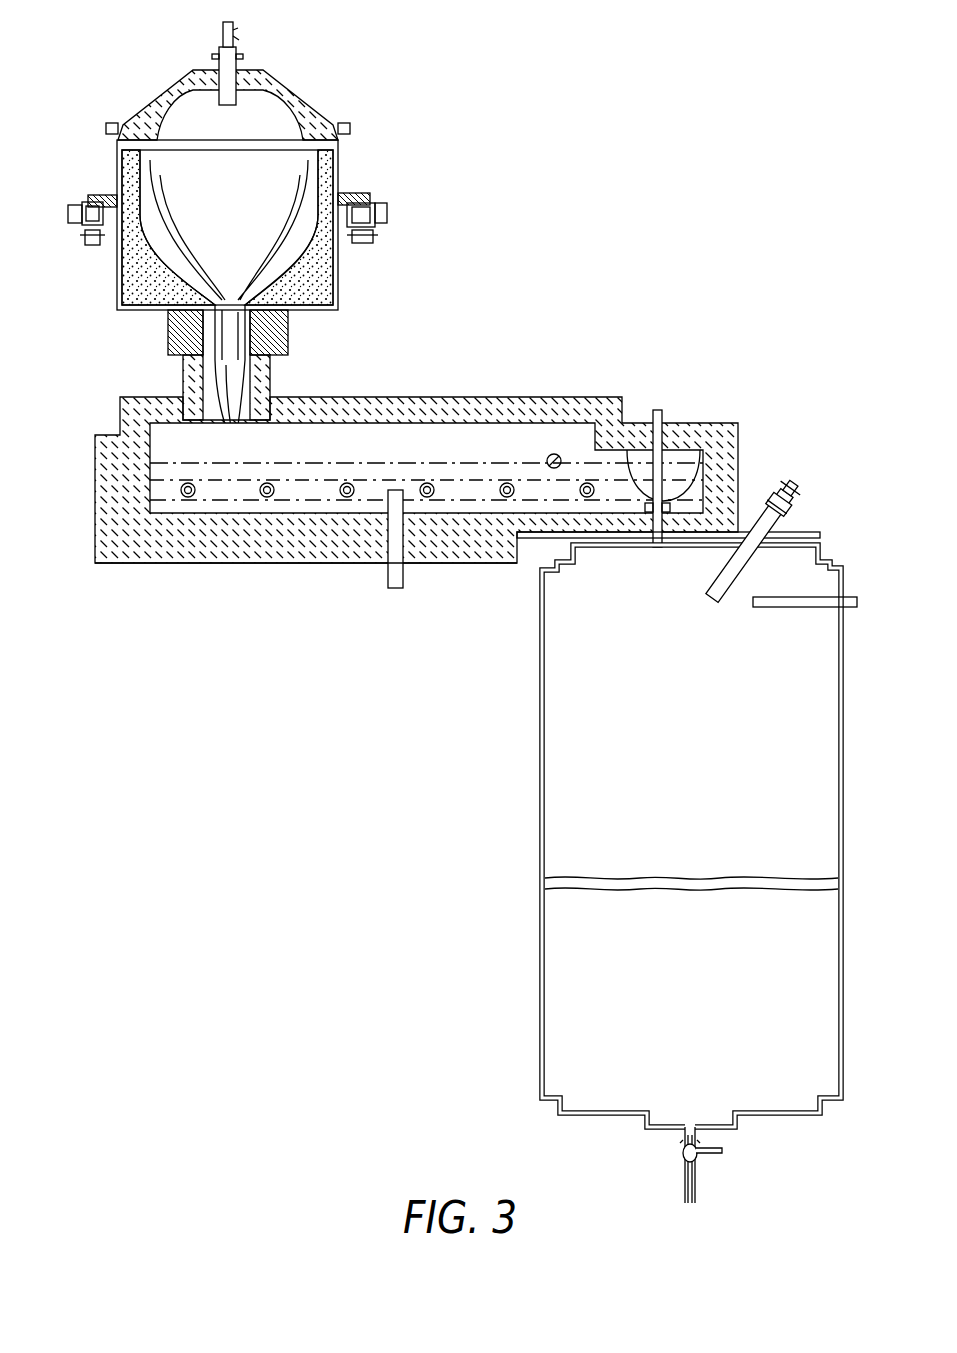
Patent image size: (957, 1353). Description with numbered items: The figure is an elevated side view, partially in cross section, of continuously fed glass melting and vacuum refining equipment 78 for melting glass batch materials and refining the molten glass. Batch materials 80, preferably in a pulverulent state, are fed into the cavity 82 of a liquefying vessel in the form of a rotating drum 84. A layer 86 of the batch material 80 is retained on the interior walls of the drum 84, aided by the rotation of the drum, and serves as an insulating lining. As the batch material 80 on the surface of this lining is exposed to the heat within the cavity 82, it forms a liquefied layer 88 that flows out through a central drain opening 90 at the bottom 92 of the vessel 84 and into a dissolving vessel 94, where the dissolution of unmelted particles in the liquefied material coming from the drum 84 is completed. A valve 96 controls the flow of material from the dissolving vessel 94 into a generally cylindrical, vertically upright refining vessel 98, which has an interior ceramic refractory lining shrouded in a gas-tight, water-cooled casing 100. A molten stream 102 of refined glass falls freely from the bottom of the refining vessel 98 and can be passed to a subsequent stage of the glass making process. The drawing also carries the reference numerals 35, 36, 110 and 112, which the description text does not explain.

The glass melting and vacuum refining equipment 78 is at (461, 612).
The batch materials 80 is at (117, 173).
The cavity 82 is at (277, 158).
The rotating drum 84 is at (259, 231).
The layer 86 is at (340, 262).
The liquefied layer 88 is at (272, 405).
The central drain opening 90 is at (203, 383).
The bottom 92 is at (290, 340).
The dissolving vessel 94 is at (457, 477).
The temperature sensor 35 is at (628, 482).
The mold cavity end 36 is at (703, 470).
The valve 96 is at (662, 422).
The ejector pin 110 is at (387, 577).
The mold base 112 is at (162, 567).
The refining vessel 98 is at (627, 839).
The casing 100 is at (540, 718).
The molten stream 102 is at (696, 1187).